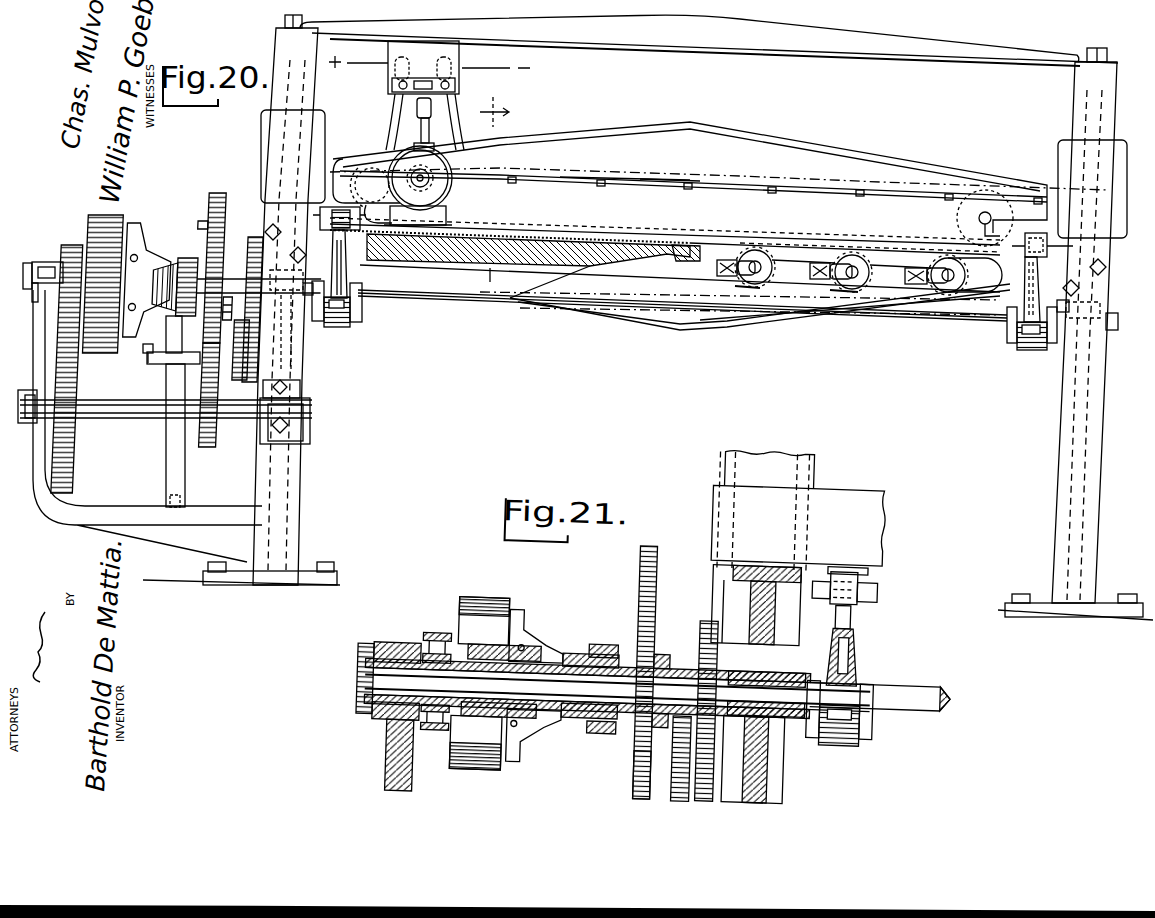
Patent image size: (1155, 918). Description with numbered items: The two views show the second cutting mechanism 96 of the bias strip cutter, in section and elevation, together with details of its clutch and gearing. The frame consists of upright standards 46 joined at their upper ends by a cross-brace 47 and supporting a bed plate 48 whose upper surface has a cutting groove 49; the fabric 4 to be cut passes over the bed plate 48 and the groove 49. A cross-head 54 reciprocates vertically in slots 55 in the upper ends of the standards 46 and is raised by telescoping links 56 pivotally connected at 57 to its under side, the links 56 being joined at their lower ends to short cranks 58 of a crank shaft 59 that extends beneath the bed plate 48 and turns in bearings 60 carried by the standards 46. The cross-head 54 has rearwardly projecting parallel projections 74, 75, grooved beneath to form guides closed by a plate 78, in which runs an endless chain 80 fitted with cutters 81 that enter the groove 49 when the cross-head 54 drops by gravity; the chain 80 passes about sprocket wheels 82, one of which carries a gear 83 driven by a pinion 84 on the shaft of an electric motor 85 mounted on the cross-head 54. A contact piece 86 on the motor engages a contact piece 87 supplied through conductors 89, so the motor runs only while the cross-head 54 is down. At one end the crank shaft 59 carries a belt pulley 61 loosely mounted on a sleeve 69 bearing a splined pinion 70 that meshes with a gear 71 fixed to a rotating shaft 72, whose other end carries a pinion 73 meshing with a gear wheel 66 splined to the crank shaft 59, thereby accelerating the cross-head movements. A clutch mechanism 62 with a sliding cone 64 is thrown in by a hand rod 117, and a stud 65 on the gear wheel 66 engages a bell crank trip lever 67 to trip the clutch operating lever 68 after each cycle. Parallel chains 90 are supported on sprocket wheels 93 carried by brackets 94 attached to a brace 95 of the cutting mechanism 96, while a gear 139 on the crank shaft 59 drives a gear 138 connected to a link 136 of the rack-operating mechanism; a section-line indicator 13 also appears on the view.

In FIG. 20, the fabric 4 is at (594, 238).
In FIG. 20, the section line indicator 13 is at (488, 181).
In FIG. 20, the upright standards 46 is at (292, 464).
In FIG. 21, the upright standards 46 is at (786, 752).
In FIG. 20, the cross-brace 47 is at (709, 40).
In FIG. 20, the bed plate 48 is at (452, 264).
In FIG. 20, the groove 49 is at (420, 250).
In FIG. 20, the cross-head 54 is at (690, 171).
In FIG. 21, the cross-head 54 is at (798, 525).
In FIG. 21, the slots 55 is at (810, 470).
In FIG. 20, the links 56 is at (348, 272).
In FIG. 21, the links 56 is at (856, 645).
In FIG. 20, the pivotal connection (upper link section) 57 is at (322, 210).
In FIG. 21, the pivotal connection (upper link section) 57 is at (866, 570).
In FIG. 20, the short cranks 58 is at (355, 312).
In FIG. 21, the short cranks 58 is at (864, 712).
In FIG. 20, the crank shaft 59 is at (520, 303).
In FIG. 21, the crank shaft 59 is at (902, 676).
In FIG. 20, the bearings 60 is at (300, 310).
In FIG. 21, the bearings 60 is at (783, 658).
In FIG. 20, the belt pulley 61 is at (110, 216).
In FIG. 21, the belt pulley 61 is at (496, 671).
In FIG. 20, the clutch mechanism 62 is at (135, 240).
In FIG. 21, the clutch mechanism 62 is at (528, 640).
In FIG. 20, the sliding cone 64 is at (160, 266).
In FIG. 21, the sliding cone 64 is at (576, 646).
In FIG. 20, the stud 65 is at (193, 222).
In FIG. 20, the gear wheel 66 is at (209, 193).
In FIG. 21, the gear wheel 66 is at (652, 540).
In FIG. 20, the bell crank trip lever 67 is at (172, 364).
In FIG. 20, the clutch operating lever 68 is at (169, 328).
In FIG. 21, the clutch operating lever 68 is at (604, 726).
In FIG. 21, the sleeve 69 is at (628, 658).
In FIG. 20, the pinion 70 is at (67, 248).
In FIG. 21, the pinion 70 is at (436, 632).
In FIG. 20, the gear 71 is at (75, 447).
In FIG. 20, the rotating shaft 72 is at (130, 418).
In FIG. 20, the pinion 73 is at (207, 447).
In FIG. 20, the projection 74 is at (532, 228).
In FIG. 20, the projection 75 is at (665, 182).
In FIG. 20, the plate 78 is at (580, 176).
In FIG. 20, the endless chain 80 is at (372, 226).
In FIG. 20, the cutters 81 is at (678, 259).
In FIG. 20, the sprocket wheels 82 is at (360, 157).
In FIG. 20, the gear 83 is at (374, 167).
In FIG. 20, the pinion 84 is at (450, 182).
In FIG. 20, the electric motor 85 is at (445, 170).
In FIG. 20, the contact piece 86 is at (440, 103).
In FIG. 20, the contact piece 87 is at (424, 78).
In FIG. 20, the conductors 89 is at (429, 70).
In FIG. 20, the parallel chains 90 is at (755, 284).
In FIG. 20, the sprocket wheels 93 is at (745, 276).
In FIG. 20, the brackets 94 is at (717, 268).
In FIG. 20, the brace 95 is at (670, 322).
In FIG. 20, the second cutting mechanism 96 is at (850, 324).
In FIG. 20, the hand rod 117 is at (146, 358).
In FIG. 20, the link 136 is at (224, 296).
In FIG. 21, the link 136 is at (634, 768).
In FIG. 20, the gear 138 is at (248, 237).
In FIG. 21, the gear 138 is at (708, 788).
In FIG. 20, the gear 139 is at (246, 380).
In FIG. 21, the gear 139 is at (703, 610).